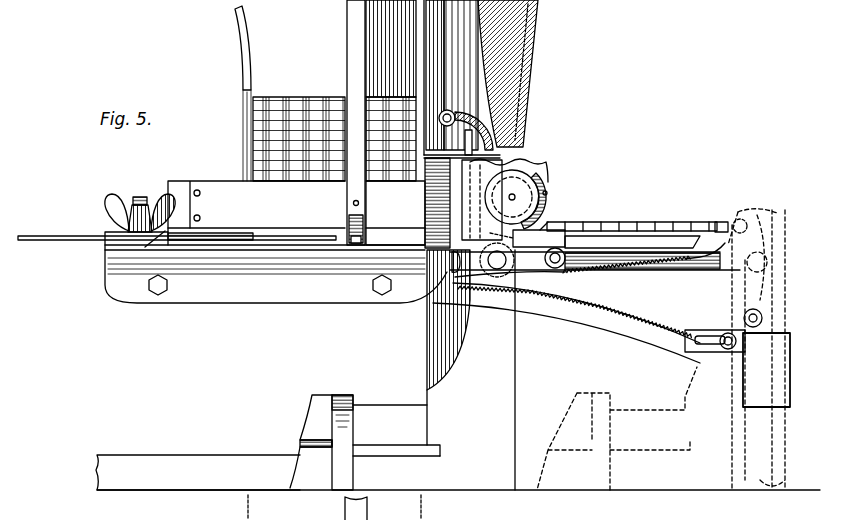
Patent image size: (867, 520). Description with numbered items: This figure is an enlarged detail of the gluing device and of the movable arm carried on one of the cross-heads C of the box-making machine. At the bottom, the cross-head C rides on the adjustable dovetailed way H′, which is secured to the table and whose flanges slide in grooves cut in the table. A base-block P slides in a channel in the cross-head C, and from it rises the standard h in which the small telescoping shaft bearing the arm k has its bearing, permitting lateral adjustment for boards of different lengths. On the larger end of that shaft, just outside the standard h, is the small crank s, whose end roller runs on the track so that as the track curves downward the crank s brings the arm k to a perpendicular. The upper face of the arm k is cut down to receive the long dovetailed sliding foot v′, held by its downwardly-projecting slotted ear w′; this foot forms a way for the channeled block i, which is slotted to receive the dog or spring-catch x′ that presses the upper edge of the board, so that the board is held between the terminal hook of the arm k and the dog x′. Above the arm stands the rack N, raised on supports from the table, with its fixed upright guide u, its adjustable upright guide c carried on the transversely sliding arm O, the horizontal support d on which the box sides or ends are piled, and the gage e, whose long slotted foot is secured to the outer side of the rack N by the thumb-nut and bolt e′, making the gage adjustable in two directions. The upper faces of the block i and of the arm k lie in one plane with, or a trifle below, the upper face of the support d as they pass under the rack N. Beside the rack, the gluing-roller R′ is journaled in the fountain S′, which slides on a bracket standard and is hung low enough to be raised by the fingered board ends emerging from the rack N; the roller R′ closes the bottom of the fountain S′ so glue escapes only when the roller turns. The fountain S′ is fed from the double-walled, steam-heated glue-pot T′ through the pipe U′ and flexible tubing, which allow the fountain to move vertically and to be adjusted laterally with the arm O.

The gage e is at (250, 93).
The fixed upright guide u is at (356, 122).
The glue-pot T′ is at (452, 77).
The pipe U′ is at (461, 119).
The horizontal arm or support d is at (282, 228).
The thumb-nut and bolt e′ is at (140, 210).
The transversely sliding arm O is at (100, 247).
The rack N is at (276, 276).
The fountain S′ is at (515, 199).
The gluing-roller R′ is at (516, 170).
The dog or spring-catch x′ is at (551, 216).
The channeled block i is at (527, 236).
The sliding foot v′ is at (593, 236).
The crank s is at (595, 260).
The slotted ear w′ is at (533, 282).
The arm k is at (705, 259).
The standard h is at (461, 353).
The base-block P is at (386, 434).
The cross-head C is at (311, 441).
The adjustable dovetailed way H′ is at (198, 472).
The base line A′ is at (458, 501).
The adjustable upright guide c is at (356, 508).